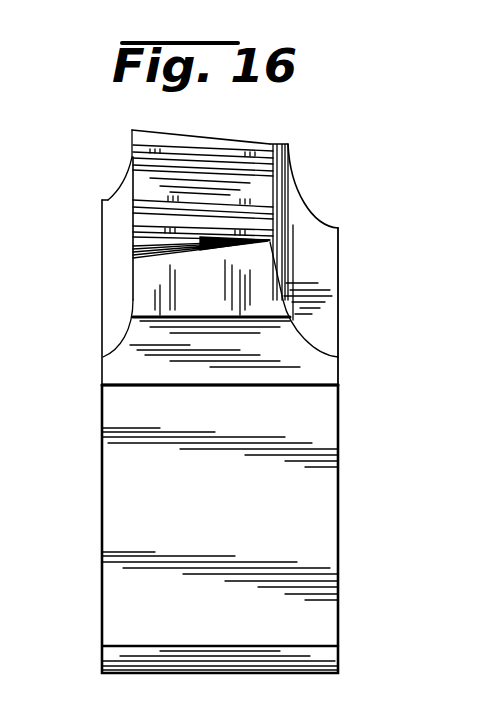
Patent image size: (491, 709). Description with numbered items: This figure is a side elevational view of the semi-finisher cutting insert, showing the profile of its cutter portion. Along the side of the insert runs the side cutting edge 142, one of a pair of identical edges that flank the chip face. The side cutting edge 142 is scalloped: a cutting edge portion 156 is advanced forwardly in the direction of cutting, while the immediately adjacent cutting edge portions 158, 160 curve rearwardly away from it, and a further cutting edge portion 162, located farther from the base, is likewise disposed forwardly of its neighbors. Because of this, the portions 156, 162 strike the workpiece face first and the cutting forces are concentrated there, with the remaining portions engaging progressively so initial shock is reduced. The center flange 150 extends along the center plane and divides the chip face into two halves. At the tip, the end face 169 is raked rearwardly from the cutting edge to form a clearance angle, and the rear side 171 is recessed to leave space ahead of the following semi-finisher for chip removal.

The center flange 150 is at (102, 315).
The end face 169 is at (253, 130).
The cutting edge portion 162 is at (128, 152).
The cutting edge portion 158 is at (127, 184).
The side cutting edge 142 is at (131, 215).
The cutting edge portion 156 is at (130, 231).
The cutting edge portion 160 is at (132, 256).
The rear side 171 is at (307, 200).